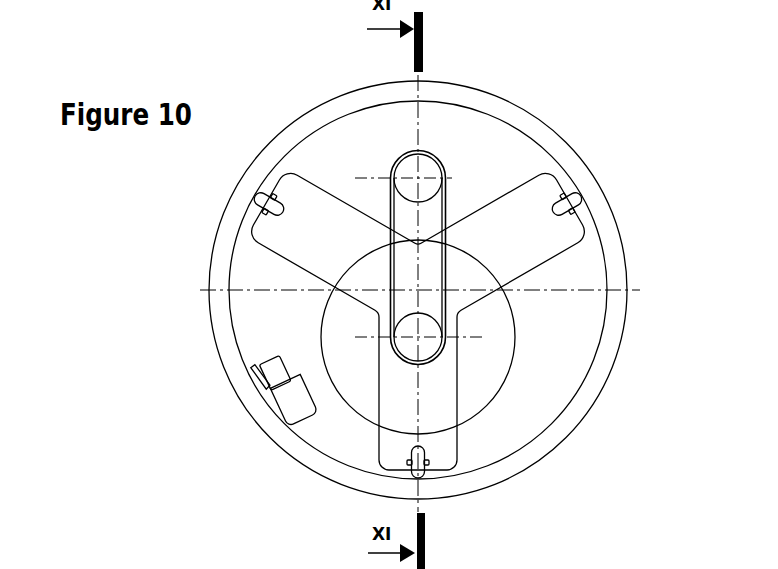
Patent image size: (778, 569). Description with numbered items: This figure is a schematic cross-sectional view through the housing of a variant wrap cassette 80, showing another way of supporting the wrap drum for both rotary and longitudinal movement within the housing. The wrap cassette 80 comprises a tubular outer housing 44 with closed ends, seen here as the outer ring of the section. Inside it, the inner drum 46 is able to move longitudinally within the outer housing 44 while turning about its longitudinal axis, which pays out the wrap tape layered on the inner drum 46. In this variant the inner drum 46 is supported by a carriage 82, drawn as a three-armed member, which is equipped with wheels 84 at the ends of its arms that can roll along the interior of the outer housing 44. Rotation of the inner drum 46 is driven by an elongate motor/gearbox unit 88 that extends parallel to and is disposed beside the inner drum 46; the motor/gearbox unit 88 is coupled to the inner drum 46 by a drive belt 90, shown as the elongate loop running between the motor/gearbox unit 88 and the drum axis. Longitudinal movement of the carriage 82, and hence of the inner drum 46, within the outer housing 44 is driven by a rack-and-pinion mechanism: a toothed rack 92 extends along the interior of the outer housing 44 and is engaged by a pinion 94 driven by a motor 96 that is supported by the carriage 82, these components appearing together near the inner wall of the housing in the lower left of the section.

The wrap cassette 80 is at (612, 91).
The tubular outer housing 44 is at (220, 323).
The carriage 82 is at (328, 215).
The inner drum 46 is at (513, 335).
The motor/gearbox unit 88 is at (427, 163).
The drive belt 90 is at (447, 203).
The wheels 84 is at (573, 203).
The toothed rack 92 is at (256, 388).
The pinion 94 is at (277, 372).
The motor 96 is at (293, 413).